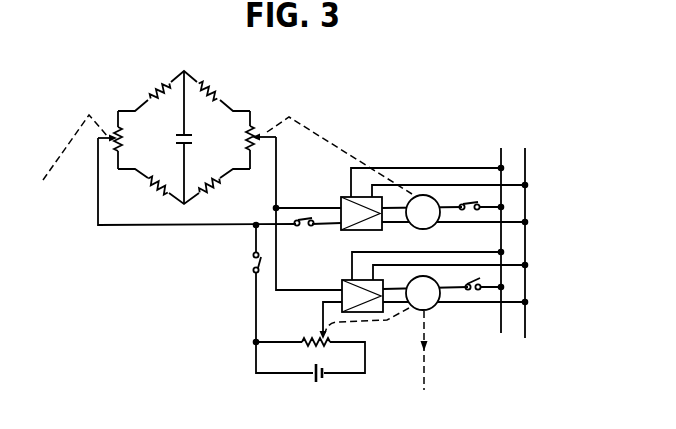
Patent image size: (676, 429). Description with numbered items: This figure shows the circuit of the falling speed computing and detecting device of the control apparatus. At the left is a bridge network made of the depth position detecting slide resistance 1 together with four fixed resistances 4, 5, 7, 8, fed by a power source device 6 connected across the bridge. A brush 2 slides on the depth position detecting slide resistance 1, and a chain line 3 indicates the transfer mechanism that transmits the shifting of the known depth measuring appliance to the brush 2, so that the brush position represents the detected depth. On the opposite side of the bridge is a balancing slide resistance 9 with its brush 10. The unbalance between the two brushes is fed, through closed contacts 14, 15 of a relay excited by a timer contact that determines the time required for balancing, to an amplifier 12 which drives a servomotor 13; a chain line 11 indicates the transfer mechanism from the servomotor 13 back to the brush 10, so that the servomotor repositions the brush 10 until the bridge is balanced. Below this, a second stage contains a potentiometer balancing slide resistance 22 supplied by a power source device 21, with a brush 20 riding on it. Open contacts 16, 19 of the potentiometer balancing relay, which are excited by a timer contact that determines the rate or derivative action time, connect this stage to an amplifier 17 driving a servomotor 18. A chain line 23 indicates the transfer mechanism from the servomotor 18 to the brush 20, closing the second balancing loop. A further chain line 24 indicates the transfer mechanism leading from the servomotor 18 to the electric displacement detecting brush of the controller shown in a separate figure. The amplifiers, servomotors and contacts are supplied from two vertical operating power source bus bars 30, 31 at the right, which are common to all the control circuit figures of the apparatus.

The depth position detecting slide resistance 1 is at (122, 139).
The brush 2 is at (107, 152).
The chain line showing transfer mechanism 3 is at (73, 137).
The fixed resistance 4 is at (157, 88).
The fixed resistance 5 is at (155, 189).
The power source device 6 is at (188, 143).
The fixed resistance 7 is at (209, 90).
The fixed resistance 8 is at (215, 189).
The balancing slide resistance 9 is at (246, 135).
The brush 10 is at (263, 151).
The chain line indicating transfer mechanism 11 is at (323, 138).
The amplifier 12 is at (361, 213).
The servomotor 13 is at (423, 212).
The closed contact of relay 14 is at (300, 227).
The closed contact of relay 15 is at (470, 196).
The open contact of potentiometer balancing relay 16 is at (253, 263).
The amplifier 17 is at (362, 296).
The servomotor 18 is at (423, 293).
The open contact of potentiometer balancing relay 19 is at (463, 279).
The brush 20 is at (320, 333).
The power source device 21 is at (323, 377).
The potentiometer balancing slide resistance 22 is at (325, 344).
The chain line indicating transfer mechanism 23 is at (375, 323).
The chain line indicating transfer mechanism 24 is at (430, 352).
The operating power source bus bar 30 is at (501, 148).
The operating power source bus bar 31 is at (525, 148).